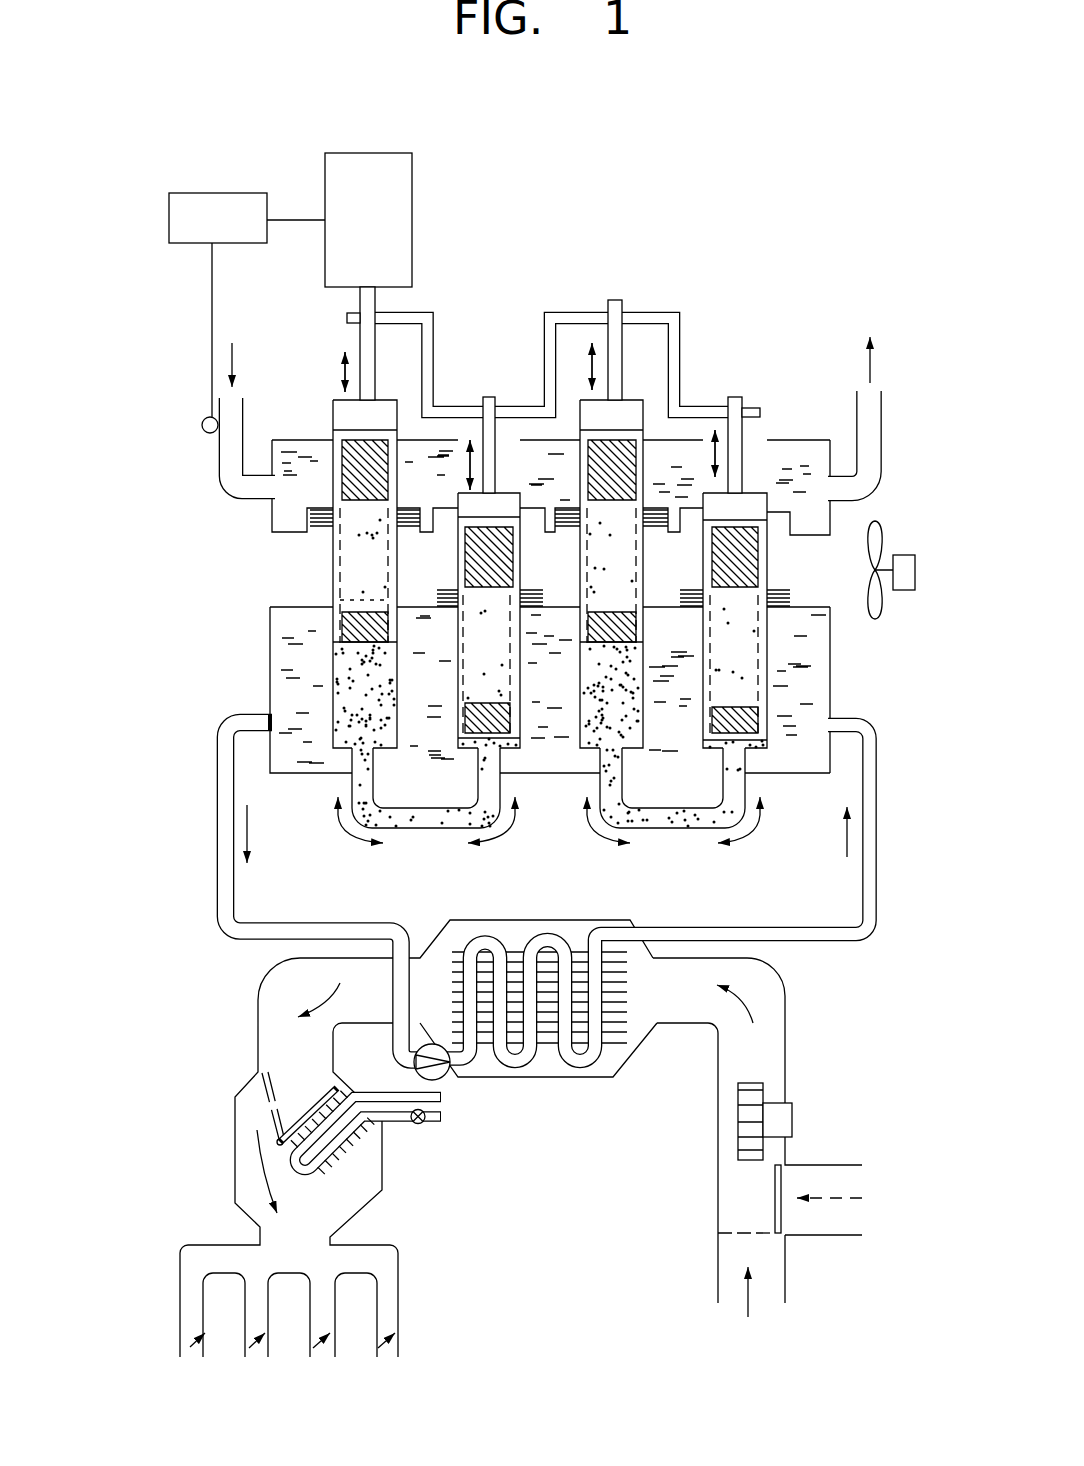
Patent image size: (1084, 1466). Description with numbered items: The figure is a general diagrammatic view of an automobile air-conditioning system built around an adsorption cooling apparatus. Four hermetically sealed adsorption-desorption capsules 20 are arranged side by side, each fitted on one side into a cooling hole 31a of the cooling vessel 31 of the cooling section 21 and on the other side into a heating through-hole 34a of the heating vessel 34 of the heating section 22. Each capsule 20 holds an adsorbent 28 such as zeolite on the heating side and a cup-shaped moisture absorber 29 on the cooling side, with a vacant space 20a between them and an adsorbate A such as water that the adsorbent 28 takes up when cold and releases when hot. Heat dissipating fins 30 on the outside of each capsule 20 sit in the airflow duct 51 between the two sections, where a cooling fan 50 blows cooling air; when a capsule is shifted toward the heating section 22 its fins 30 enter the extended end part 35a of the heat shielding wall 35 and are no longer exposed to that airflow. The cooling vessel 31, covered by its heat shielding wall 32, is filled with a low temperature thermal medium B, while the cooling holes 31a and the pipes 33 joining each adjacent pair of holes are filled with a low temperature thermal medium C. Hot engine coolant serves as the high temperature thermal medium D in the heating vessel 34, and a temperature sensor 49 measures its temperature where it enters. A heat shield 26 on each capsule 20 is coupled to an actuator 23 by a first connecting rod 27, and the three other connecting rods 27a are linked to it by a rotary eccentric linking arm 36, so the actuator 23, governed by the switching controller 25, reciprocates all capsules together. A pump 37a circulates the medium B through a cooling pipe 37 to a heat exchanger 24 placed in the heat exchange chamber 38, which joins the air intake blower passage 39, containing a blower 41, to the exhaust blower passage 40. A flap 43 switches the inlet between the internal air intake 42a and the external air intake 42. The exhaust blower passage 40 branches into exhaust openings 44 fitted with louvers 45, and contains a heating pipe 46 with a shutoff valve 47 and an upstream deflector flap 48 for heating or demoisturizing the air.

The adsorption-desorption capsule 20 is at (335, 580).
The vacant space 20a is at (355, 598).
The cooling section 21 is at (577, 690).
The heating section 22 is at (505, 401).
The actuator 23 is at (412, 207).
The heat exchanger 24 is at (603, 1078).
The switching controller 25 is at (190, 245).
The heat shield 26 is at (282, 587).
The first connecting rod 27 is at (375, 290).
The connecting rod 27a is at (488, 397).
The adsorbent 28 is at (340, 437).
The moisture absorber 29 is at (350, 625).
The heat dissipating fins 30 is at (325, 520).
The cooling vessel 31 is at (867, 690).
The cooling hole 31a is at (340, 728).
The heat shielding wall 32 is at (867, 690).
The pipe 33 is at (430, 830).
The heating vessel 34 is at (800, 455).
The heating through-hole 34a is at (335, 462).
The heat shielding wall 35 is at (800, 455).
The end part 35a is at (813, 528).
The rotary eccentric linking arm 36 is at (545, 352).
The cooling pipe 37 is at (218, 912).
The pump 37a is at (445, 1075).
The heat exchange chamber 38 is at (557, 1070).
The air intake blower passage 39 is at (770, 985).
The exhaust blower passage 40 is at (275, 990).
The blower 41 is at (765, 1085).
The external air intake 42 is at (833, 1210).
The internal air intake 42a is at (733, 1255).
The flap 43 is at (782, 1183).
The exhaust opening 44 is at (190, 1316).
The louver 45 is at (190, 1345).
The heating pipe 46 is at (345, 1163).
The shutoff valve 47 is at (418, 1124).
The deflector flap 48 is at (317, 1097).
The temperature sensor 49 is at (202, 427).
The cooling fan 50 is at (884, 530).
The airflow duct 51 is at (783, 577).
The adsorbate A is at (358, 555).
The low temperature thermal medium B is at (787, 697).
The low temperature thermal medium C is at (358, 713).
The high temperature thermal medium D is at (312, 485).